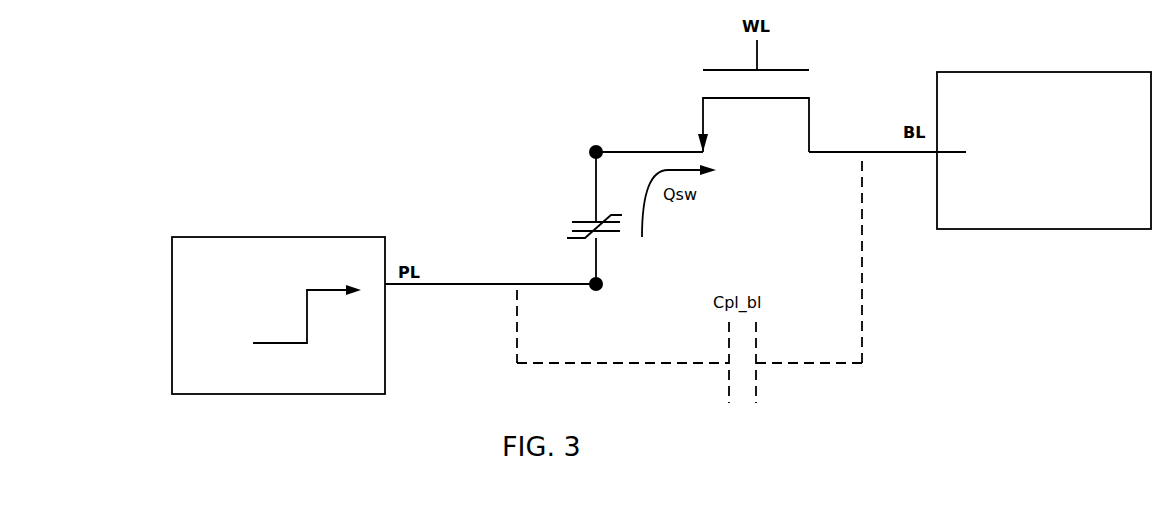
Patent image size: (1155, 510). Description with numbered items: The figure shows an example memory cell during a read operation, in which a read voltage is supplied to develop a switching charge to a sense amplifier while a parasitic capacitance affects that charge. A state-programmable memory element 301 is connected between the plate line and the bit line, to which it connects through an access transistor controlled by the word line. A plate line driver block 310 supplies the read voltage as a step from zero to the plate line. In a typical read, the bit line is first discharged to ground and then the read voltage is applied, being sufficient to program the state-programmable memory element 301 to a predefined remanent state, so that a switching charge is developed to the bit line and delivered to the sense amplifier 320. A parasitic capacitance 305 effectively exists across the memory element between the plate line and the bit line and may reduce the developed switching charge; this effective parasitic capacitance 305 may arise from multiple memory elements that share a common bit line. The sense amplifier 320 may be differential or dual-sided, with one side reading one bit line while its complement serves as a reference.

The plate line driver (VPL source) 310 is at (245, 237).
The sense amplifier 320 is at (1018, 72).
The state-programmable memory element 301 is at (579, 220).
The parasitic capacitance 305 is at (729, 370).